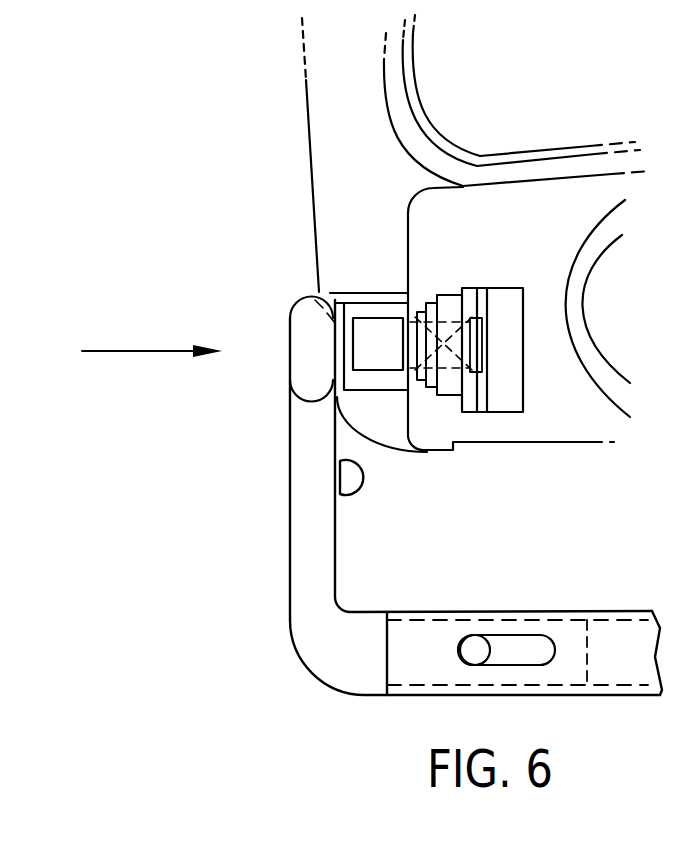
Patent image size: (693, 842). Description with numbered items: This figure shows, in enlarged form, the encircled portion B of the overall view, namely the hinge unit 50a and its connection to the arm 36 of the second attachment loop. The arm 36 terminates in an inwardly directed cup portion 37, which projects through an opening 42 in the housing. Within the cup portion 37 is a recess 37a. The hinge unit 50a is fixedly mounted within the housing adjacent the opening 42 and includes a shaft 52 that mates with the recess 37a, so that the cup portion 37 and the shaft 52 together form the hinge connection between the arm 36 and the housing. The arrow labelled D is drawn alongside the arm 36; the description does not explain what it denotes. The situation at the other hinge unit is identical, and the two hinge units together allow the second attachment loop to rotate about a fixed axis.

The encircled portion B is at (446, 216).
The direction of movement D is at (143, 350).
The arm 36 is at (292, 548).
The cup portion 37 is at (353, 295).
The recess 37a is at (370, 328).
The opening 42 is at (383, 291).
The shaft 52 is at (370, 360).
The hinge unit 50a is at (512, 425).